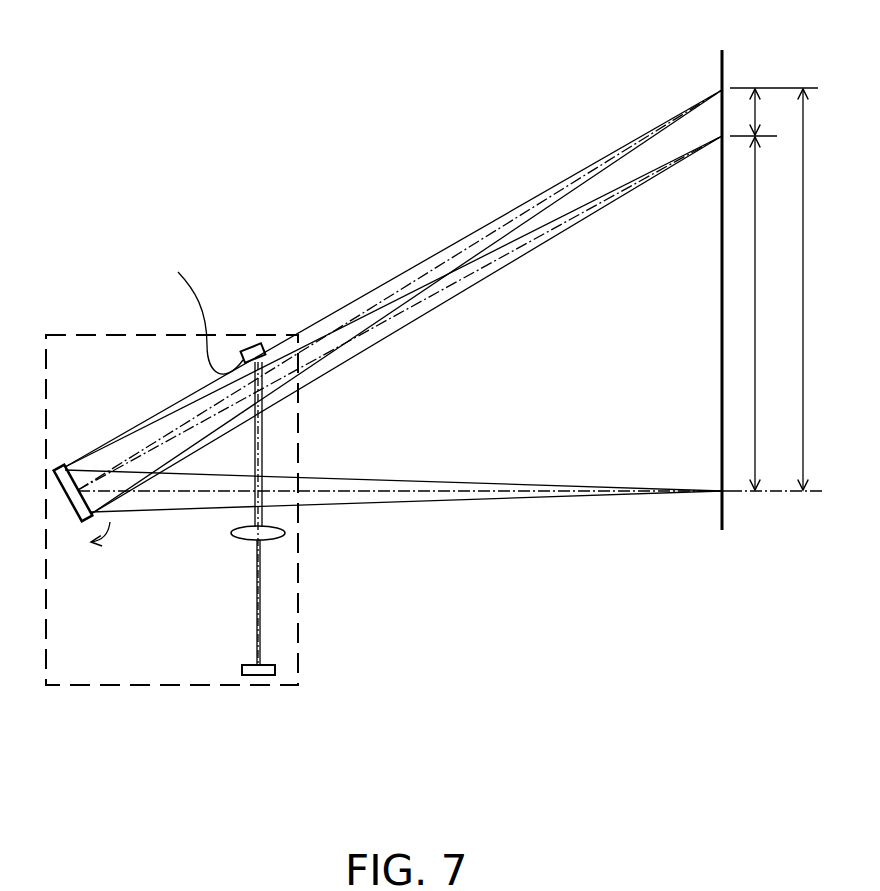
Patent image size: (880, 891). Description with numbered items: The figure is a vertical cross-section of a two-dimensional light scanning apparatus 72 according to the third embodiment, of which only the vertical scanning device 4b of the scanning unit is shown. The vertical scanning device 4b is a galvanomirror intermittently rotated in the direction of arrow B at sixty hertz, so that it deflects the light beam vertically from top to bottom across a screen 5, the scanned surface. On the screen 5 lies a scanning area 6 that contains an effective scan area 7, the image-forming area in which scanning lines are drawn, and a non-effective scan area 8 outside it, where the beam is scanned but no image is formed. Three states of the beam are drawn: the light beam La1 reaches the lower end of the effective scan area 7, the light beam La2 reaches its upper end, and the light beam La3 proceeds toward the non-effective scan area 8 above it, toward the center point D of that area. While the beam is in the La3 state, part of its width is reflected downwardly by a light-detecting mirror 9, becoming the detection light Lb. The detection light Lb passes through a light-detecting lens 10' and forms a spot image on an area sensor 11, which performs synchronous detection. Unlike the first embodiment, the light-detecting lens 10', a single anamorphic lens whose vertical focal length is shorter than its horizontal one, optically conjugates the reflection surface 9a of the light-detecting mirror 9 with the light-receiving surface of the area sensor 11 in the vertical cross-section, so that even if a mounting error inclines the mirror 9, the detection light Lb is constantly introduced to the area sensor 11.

The screen 5 is at (716, 377).
The center point of the non-effective scan area D is at (717, 87).
The non-effective scan area 8 is at (753, 112).
The effective scan area 7 is at (769, 313).
The scanning area 6 is at (777, 290).
The light scanning apparatus 72 is at (117, 330).
The vertical scanning device 4b is at (63, 455).
The arrow B is at (85, 543).
The light beam La3 is at (218, 390).
The light beam La2 is at (218, 443).
The light beam La1 is at (148, 500).
The light-detecting mirror 9 is at (262, 344).
The reflection surface 9a is at (201, 314).
The detection light Lb is at (268, 440).
The light-detecting lens 10' is at (312, 542).
The area sensor 11 is at (280, 662).